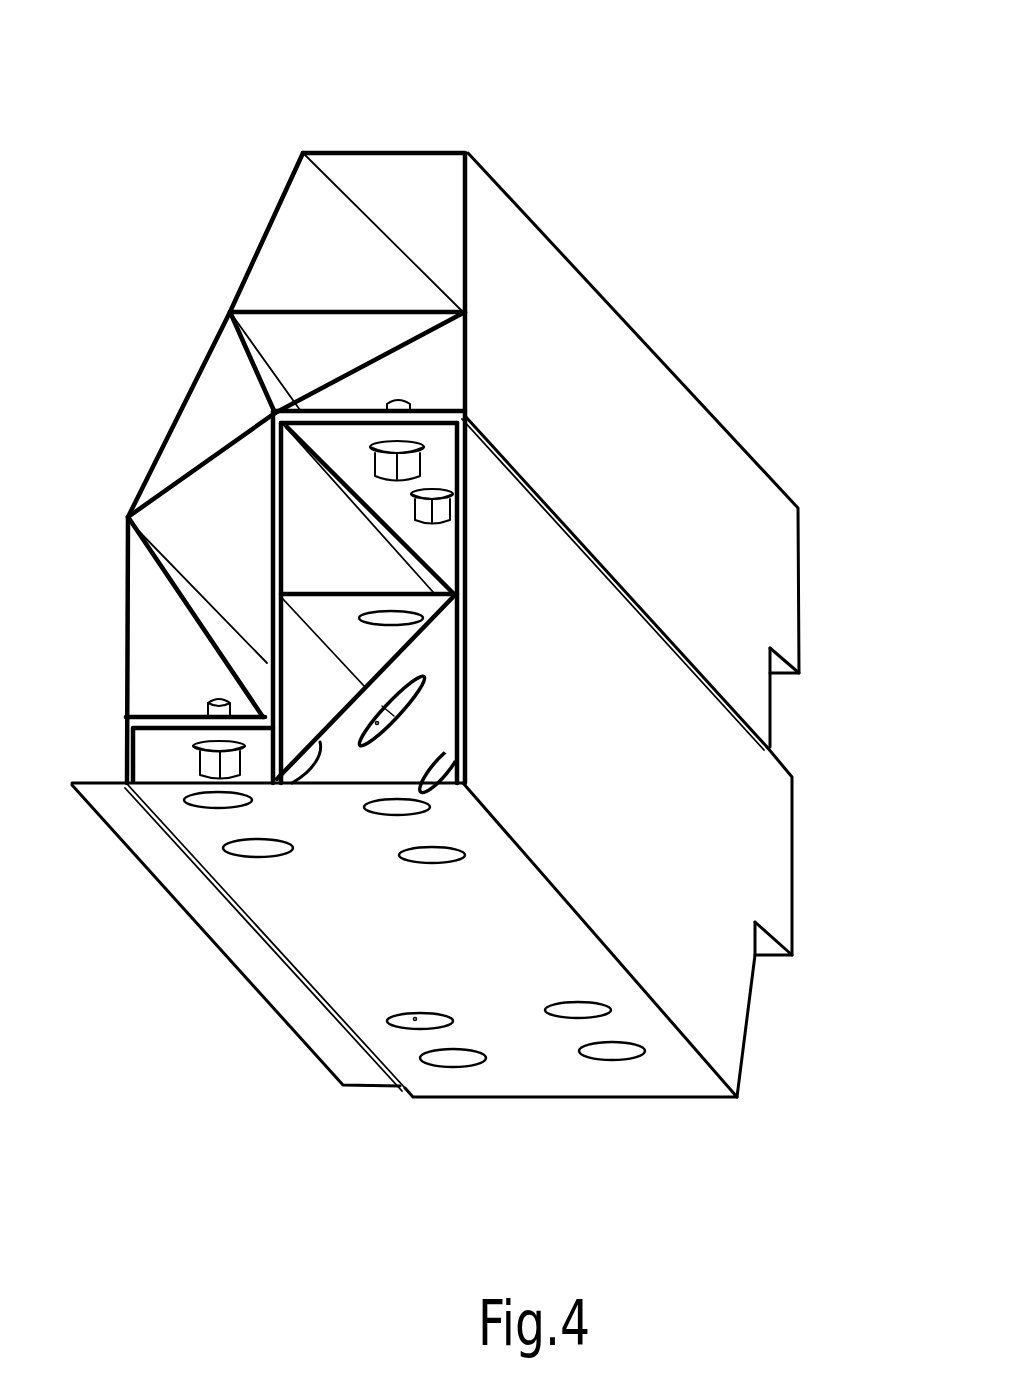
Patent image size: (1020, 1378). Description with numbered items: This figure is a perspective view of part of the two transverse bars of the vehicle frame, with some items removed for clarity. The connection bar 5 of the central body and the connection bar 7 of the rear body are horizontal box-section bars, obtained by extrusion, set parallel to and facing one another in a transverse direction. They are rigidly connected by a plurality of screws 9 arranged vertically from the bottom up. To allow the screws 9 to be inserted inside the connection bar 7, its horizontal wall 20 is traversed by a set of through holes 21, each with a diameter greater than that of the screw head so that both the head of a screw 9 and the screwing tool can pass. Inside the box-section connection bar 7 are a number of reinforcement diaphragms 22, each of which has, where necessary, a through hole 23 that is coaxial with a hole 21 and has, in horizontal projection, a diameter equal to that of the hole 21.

The connection bar 5 is at (427, 102).
The connection bar 7 is at (775, 1057).
The screw 9 is at (202, 762).
The horizontal wall 20 is at (527, 1068).
The through hole 21 is at (415, 1021).
The reinforcement diaphragm 22 is at (318, 743).
The through hole 23 is at (373, 745).